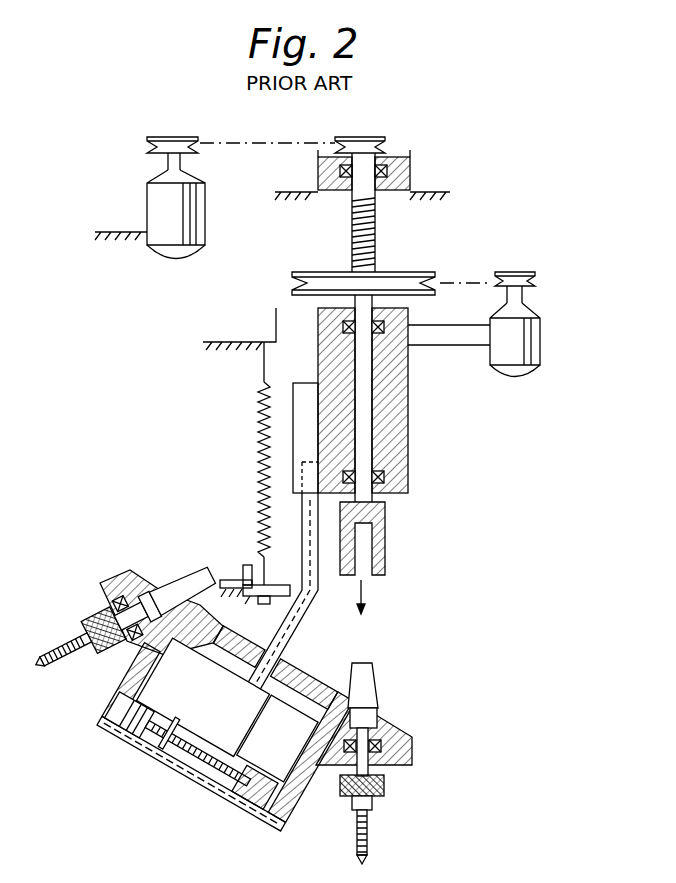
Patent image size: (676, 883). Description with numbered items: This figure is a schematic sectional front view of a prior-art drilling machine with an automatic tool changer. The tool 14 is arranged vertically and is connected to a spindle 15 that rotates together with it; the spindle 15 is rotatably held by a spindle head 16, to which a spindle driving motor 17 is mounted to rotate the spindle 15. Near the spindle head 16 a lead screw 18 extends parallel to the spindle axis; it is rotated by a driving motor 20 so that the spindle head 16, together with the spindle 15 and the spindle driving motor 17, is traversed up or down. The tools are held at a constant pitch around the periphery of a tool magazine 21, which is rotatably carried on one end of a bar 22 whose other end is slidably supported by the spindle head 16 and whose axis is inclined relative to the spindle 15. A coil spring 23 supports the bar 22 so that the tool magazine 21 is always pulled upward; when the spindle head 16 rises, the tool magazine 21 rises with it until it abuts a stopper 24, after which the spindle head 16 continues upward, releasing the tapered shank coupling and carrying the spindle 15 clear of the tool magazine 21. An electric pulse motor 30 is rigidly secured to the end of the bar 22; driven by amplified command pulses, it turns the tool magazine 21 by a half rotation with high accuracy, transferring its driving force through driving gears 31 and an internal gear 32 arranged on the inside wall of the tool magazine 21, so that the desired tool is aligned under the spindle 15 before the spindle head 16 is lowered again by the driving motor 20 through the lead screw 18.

The tool 14 is at (384, 763).
The spindle 15 is at (378, 517).
The spindle head 16 is at (400, 424).
The spindle driving motor 17 is at (520, 340).
The lead screw 18 is at (372, 226).
The driving motor 20 is at (160, 210).
The tool magazine 21 is at (102, 708).
The bar 22 is at (300, 618).
The coil spring 23 is at (258, 455).
The stopper 24 is at (236, 580).
The electric pulse motor 30 is at (308, 772).
The driving gears 31 is at (176, 767).
The internal gear 32 is at (243, 808).